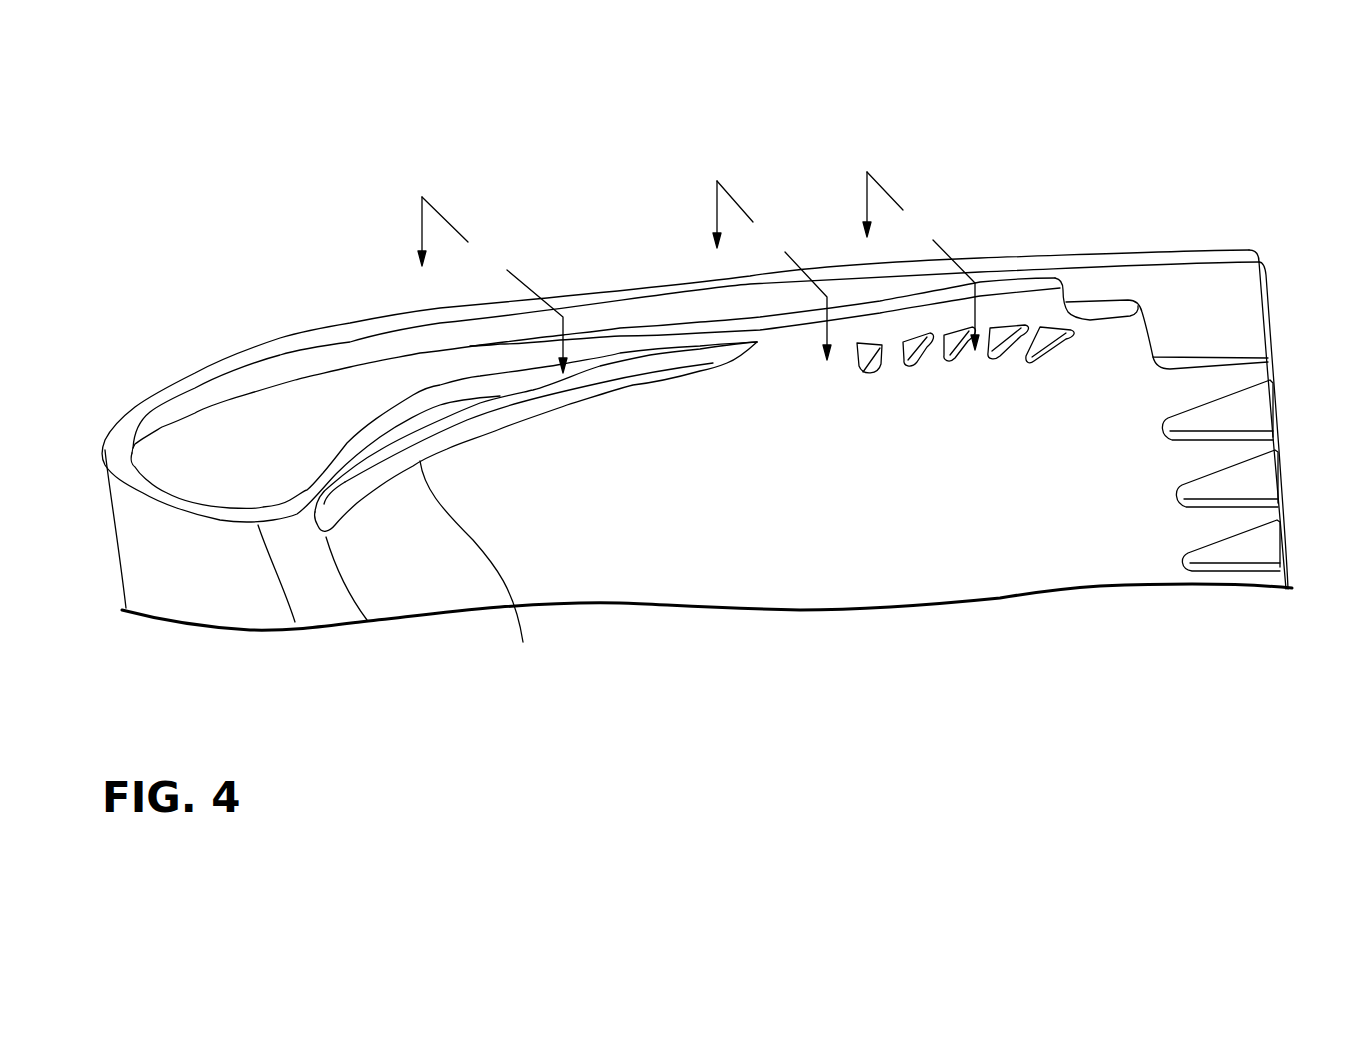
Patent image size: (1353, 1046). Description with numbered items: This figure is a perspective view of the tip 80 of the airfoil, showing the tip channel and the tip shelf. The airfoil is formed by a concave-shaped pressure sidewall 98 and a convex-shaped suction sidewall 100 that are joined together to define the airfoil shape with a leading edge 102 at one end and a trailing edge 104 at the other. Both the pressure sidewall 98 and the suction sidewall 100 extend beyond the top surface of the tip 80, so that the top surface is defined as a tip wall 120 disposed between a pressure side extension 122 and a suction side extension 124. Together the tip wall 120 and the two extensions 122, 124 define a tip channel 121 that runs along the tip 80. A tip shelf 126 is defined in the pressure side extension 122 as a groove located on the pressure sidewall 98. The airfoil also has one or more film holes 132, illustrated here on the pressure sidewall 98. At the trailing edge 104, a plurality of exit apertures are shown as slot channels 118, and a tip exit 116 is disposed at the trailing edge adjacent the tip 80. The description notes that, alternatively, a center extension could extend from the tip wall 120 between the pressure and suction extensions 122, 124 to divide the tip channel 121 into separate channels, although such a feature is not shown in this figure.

The tip 80 is at (265, 213).
The pressure sidewall 98 is at (599, 539).
The suction sidewall 100 is at (133, 527).
The leading edge 102 is at (245, 527).
The trailing edge 104 is at (1253, 249).
The tip exit 116 is at (1230, 325).
The slot channels 118 is at (1255, 545).
The tip wall 120 is at (257, 458).
The tip channel 121 is at (308, 390).
The pressure side extension 122 is at (680, 340).
The suction side extension 124 is at (388, 327).
The tip shelf 126 is at (485, 568).
The film holes 132 is at (875, 377).